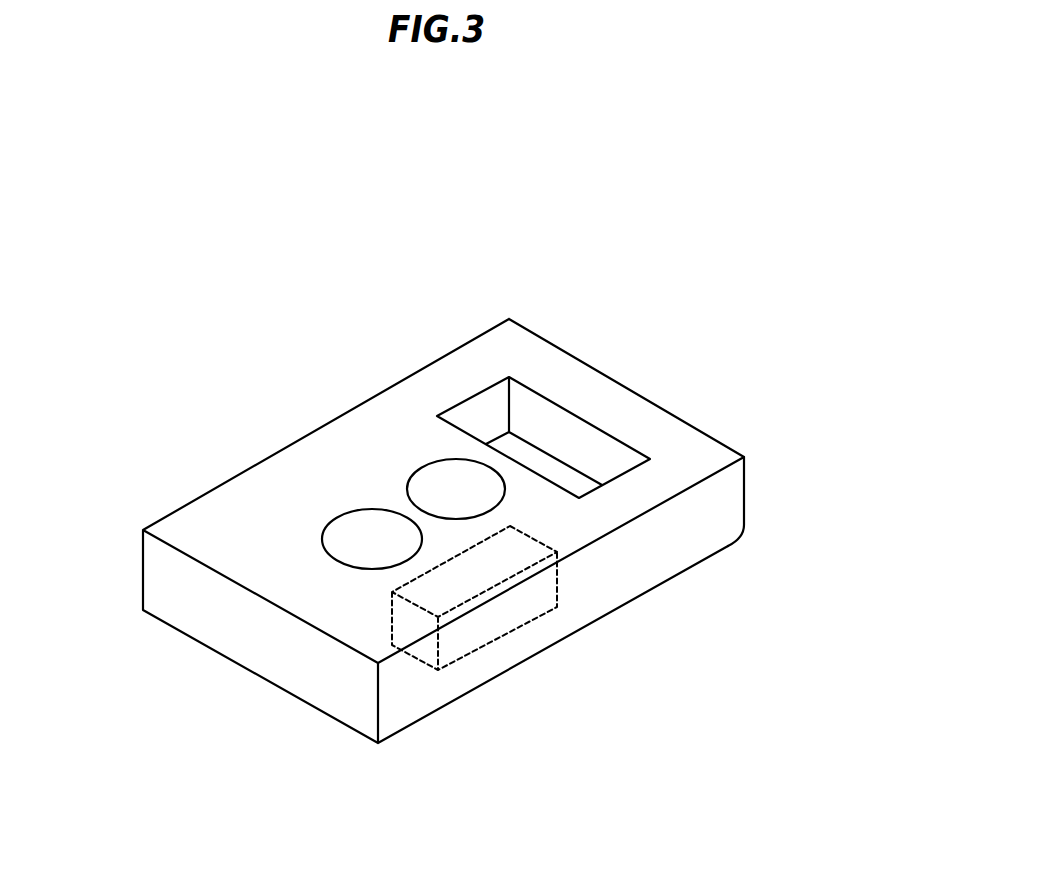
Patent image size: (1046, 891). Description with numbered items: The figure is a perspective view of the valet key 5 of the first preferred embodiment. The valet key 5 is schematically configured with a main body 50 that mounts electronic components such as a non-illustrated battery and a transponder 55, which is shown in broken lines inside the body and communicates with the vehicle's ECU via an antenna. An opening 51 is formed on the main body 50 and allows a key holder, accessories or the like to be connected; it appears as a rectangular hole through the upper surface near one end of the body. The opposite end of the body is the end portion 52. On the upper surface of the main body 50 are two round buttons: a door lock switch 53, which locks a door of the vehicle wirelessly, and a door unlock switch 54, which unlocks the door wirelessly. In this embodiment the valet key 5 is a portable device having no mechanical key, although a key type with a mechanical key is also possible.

The valet key 5 is at (469, 506).
The main body 50 is at (290, 665).
The opening 51 is at (573, 412).
The end portion 52 is at (745, 497).
The door lock switch 53 is at (353, 520).
The door unlock switch 54 is at (437, 472).
The transponder 55 is at (522, 627).